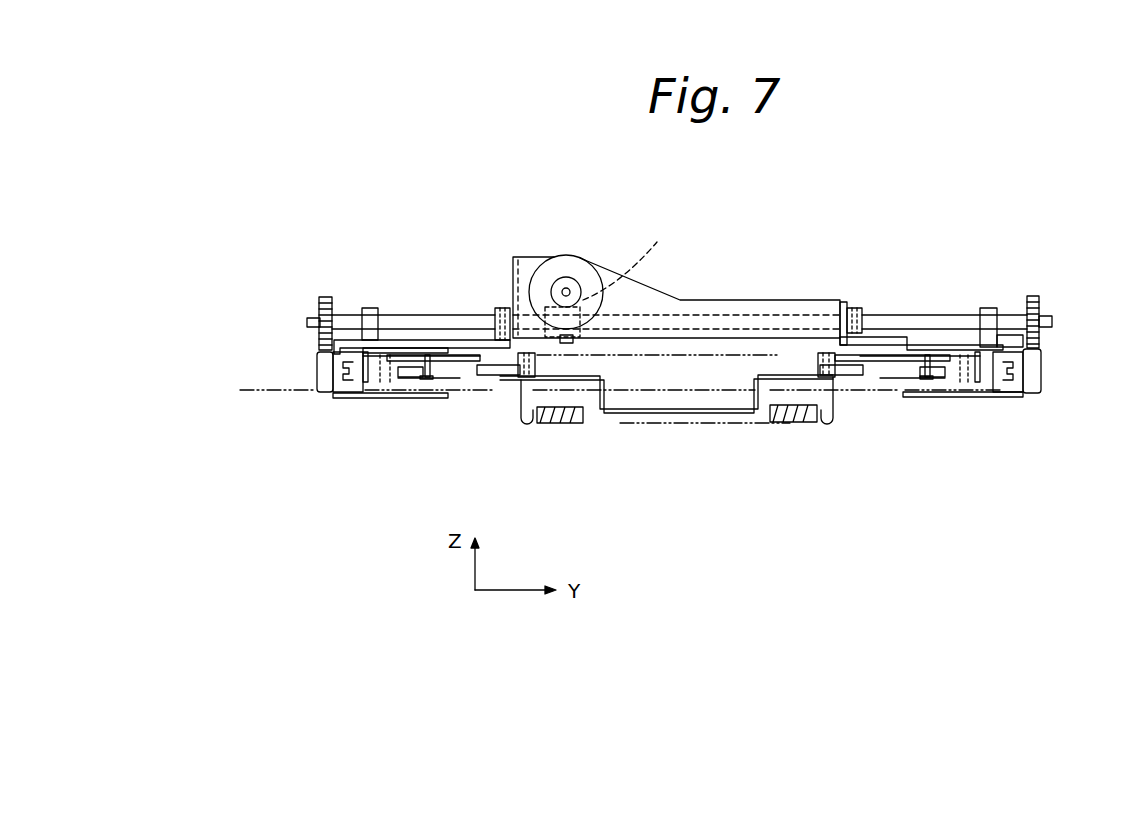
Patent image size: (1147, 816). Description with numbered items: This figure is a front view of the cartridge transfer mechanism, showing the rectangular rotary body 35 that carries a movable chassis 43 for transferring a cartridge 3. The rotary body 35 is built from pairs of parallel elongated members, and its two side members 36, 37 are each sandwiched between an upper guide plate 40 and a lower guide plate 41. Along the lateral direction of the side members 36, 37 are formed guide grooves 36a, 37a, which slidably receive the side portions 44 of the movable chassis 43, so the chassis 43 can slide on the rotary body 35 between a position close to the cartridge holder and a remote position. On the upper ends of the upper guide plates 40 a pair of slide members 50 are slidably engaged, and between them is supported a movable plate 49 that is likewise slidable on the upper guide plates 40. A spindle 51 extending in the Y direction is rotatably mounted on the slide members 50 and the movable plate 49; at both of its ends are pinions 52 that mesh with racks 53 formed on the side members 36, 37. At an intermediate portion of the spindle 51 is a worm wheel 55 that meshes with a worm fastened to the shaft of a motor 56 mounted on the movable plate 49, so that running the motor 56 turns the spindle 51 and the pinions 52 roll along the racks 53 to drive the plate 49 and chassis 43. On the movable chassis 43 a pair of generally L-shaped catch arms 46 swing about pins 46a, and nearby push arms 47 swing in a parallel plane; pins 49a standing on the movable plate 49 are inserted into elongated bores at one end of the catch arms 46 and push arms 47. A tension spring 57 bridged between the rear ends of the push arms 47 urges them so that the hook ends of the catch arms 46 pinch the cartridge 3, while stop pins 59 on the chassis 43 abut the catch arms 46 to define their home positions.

The cartridge 3 is at (700, 381).
The rectangular rotary body 35 is at (1048, 355).
The side member 36 is at (1017, 392).
The guide groove 36a is at (1013, 372).
The side member 37 is at (340, 393).
The guide groove 37a is at (343, 376).
The upper guide plate 40 is at (345, 340).
The lower guide plate 41 is at (405, 398).
The movable chassis 43 is at (585, 381).
The side portion 44 is at (355, 392).
The catch arm 46 is at (452, 362).
The pin 46a is at (382, 385).
The push arm 47 is at (486, 375).
The movable plate 49 is at (877, 342).
The pin 49a is at (505, 387).
The slide member 50 is at (369, 308).
The spindle 51 is at (907, 316).
The pinion 52 is at (326, 297).
The rack 53 is at (322, 392).
The worm wheel 55 is at (629, 259).
The motor 56 is at (588, 277).
The tension spring 57 is at (785, 423).
The stop pin 59 is at (428, 378).